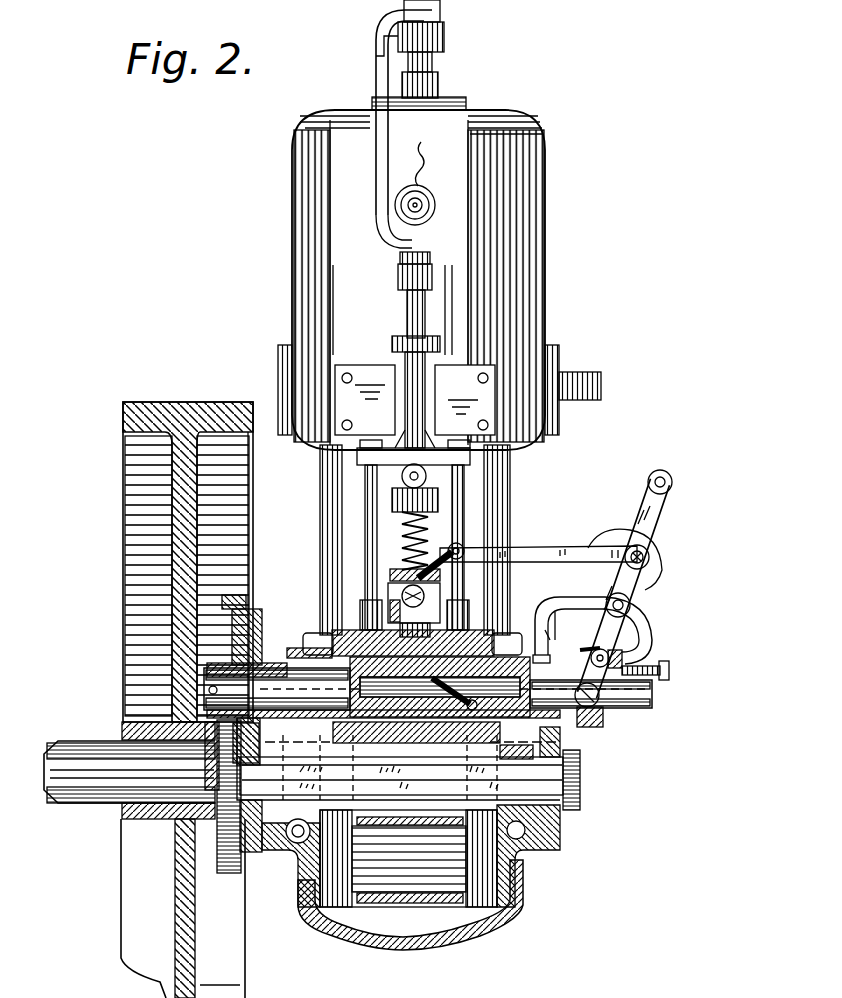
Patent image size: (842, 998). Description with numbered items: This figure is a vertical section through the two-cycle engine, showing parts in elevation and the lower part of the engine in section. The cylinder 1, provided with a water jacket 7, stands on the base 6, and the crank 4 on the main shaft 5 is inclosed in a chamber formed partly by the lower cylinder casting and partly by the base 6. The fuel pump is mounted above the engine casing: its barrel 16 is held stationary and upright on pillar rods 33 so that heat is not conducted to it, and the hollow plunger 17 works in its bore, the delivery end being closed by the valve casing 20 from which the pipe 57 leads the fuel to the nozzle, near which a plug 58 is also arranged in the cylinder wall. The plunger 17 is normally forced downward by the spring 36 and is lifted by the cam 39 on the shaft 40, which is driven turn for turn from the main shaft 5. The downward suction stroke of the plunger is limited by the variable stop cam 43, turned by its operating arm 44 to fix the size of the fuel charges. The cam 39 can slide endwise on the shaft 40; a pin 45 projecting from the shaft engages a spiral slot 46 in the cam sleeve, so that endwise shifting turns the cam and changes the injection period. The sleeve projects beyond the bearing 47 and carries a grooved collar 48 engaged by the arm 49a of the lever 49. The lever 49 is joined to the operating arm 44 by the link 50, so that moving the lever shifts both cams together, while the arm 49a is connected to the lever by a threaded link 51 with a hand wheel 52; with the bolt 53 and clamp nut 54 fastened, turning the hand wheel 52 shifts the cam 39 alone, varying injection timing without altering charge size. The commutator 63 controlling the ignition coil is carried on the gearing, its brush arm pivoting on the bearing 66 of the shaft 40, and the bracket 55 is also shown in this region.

The cylinder 1 is at (508, 470).
The crank 4 is at (400, 853).
The main shaft 5 is at (98, 790).
The base 6 is at (458, 930).
The water jacket 7 is at (540, 240).
The pump barrel 16 is at (396, 362).
The plunger 17 is at (400, 530).
The valve casing 20 is at (406, 312).
The pillar rods 33 is at (364, 510).
The spring 36 is at (400, 545).
The cam 39 is at (358, 640).
The shaft 40 is at (208, 686).
The cam 43 is at (388, 606).
The operating arm 44 is at (458, 544).
The pin 45 is at (448, 696).
The spiral slot 46 is at (462, 705).
The bearing 47 is at (572, 726).
The grooved collar 48 is at (603, 714).
The lever 49 is at (648, 508).
The arm 49a is at (610, 656).
The link 50 is at (540, 548).
The threaded link 51 is at (622, 662).
The hand wheel 52 is at (632, 606).
The bolt 53 is at (650, 558).
The clamp nut 54 is at (660, 548).
The bracket 55 is at (580, 598).
The pipe 57 is at (374, 215).
The plug 58 is at (440, 96).
The commutator 63 is at (250, 630).
The bearing 66 is at (292, 680).